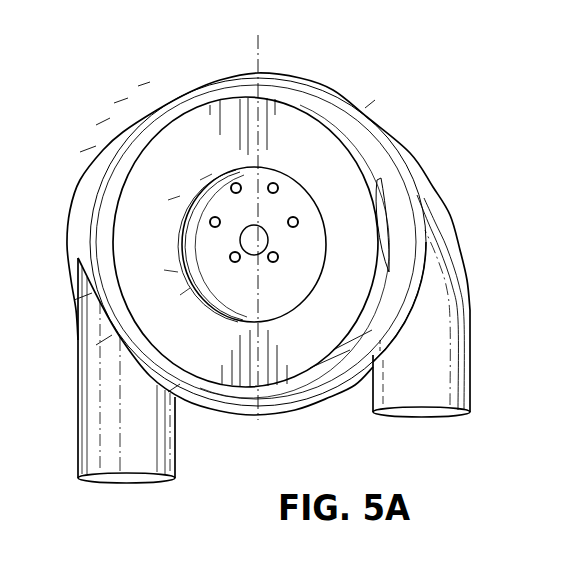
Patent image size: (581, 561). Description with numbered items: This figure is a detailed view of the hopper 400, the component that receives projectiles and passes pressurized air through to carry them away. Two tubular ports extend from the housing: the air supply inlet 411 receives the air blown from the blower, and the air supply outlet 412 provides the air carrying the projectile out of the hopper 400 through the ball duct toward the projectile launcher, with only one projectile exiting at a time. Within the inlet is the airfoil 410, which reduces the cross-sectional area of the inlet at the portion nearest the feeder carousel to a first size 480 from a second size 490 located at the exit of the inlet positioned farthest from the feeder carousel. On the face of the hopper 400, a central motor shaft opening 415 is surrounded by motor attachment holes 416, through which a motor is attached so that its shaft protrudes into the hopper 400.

The hopper 400 is at (418, 116).
The airfoil 410 is at (424, 208).
The first size 480 is at (425, 236).
The motor shaft opening 415 is at (248, 236).
The motor attachment holes 416 is at (274, 184).
The air supply inlet 411 is at (428, 380).
The air supply outlet 412 is at (143, 462).
The second size 490 is at (444, 417).